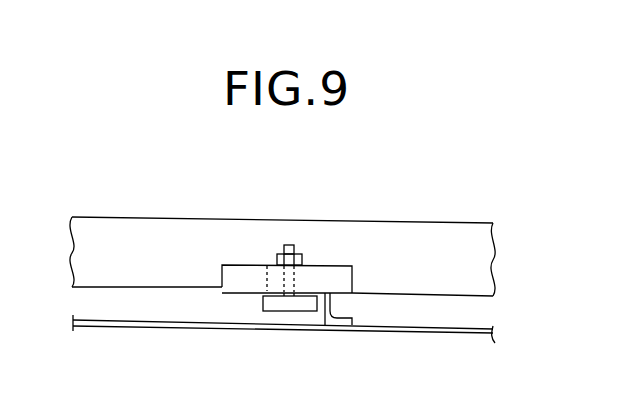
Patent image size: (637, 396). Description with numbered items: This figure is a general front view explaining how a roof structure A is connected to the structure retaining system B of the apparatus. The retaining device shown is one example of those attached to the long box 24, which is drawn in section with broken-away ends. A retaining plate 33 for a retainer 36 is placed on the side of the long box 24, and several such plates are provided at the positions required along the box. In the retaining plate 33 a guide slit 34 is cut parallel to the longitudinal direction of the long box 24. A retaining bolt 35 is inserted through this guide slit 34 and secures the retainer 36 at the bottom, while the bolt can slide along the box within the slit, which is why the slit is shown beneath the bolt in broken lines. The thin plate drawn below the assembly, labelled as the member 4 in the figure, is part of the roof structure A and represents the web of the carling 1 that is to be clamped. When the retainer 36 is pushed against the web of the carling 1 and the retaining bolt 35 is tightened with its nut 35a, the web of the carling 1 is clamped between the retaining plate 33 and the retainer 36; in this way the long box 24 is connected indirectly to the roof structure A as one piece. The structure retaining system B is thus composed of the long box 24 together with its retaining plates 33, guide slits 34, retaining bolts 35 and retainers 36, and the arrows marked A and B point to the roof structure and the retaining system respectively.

The carling 1 is at (337, 316).
The rail 4 is at (185, 328).
The long box 24 is at (394, 232).
The retaining plate 33 is at (352, 282).
The guide slit 34 is at (268, 274).
The retaining bolt 35 is at (291, 245).
The nut 35a is at (301, 258).
The retainer 36 is at (283, 305).
The roof structure A is at (413, 334).
The structure retaining system B is at (278, 187).